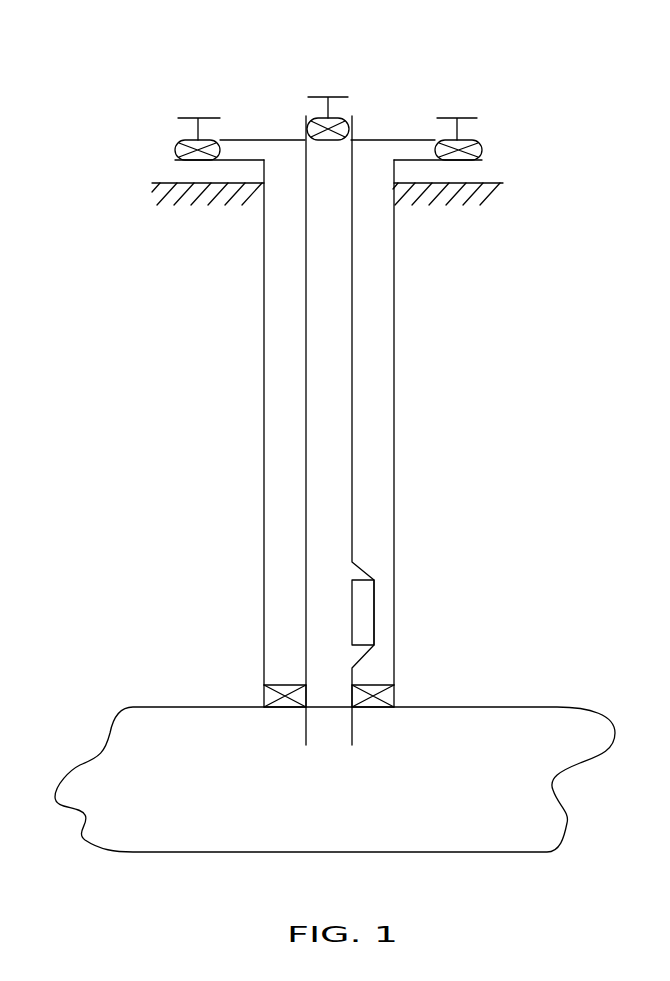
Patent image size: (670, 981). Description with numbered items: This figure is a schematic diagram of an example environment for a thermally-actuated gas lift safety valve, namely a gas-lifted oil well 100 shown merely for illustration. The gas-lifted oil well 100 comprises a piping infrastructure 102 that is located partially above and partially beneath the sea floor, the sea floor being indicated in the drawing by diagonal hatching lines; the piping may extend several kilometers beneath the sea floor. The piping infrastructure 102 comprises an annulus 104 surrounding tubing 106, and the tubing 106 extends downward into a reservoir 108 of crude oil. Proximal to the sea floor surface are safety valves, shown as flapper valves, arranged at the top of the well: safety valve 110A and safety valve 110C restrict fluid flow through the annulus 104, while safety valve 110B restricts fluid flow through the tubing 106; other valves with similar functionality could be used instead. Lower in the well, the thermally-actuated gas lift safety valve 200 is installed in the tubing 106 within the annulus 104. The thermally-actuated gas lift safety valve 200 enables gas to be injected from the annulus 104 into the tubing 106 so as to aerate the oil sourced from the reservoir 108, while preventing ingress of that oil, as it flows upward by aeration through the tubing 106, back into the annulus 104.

The gas-lifted oil well 100 is at (586, 61).
The piping infrastructure 102 is at (169, 152).
The annulus 104 is at (277, 303).
The tubing 106 is at (322, 452).
The reservoir 108 is at (64, 778).
The safety valve 110A is at (188, 114).
The safety valve 110B is at (320, 93).
The safety valve 110C is at (447, 114).
The thermally-actuated gas lift safety valve 200 is at (380, 612).